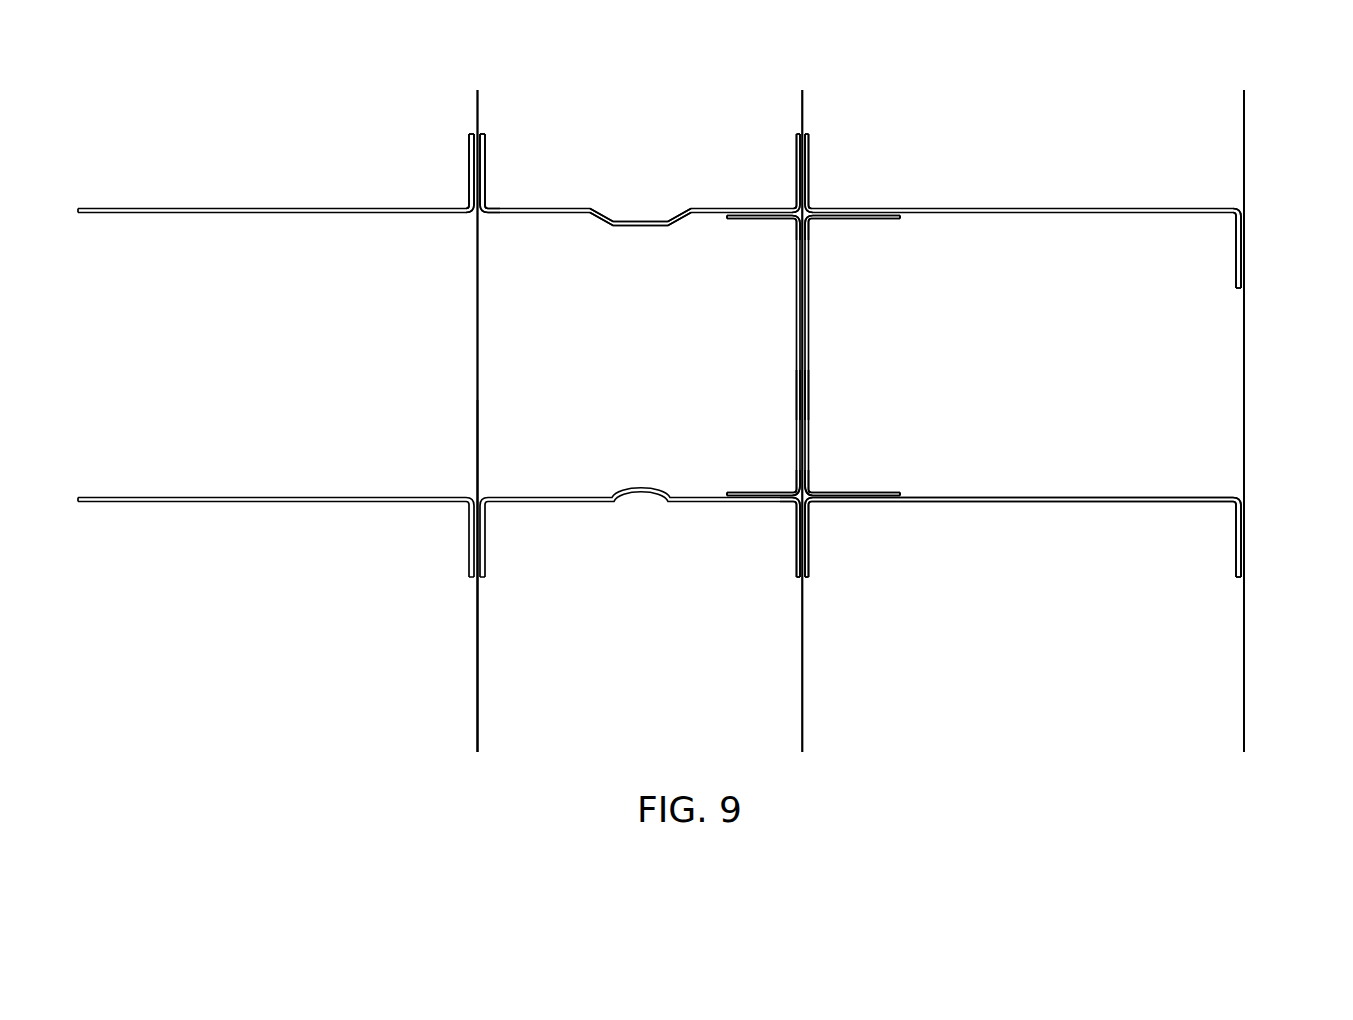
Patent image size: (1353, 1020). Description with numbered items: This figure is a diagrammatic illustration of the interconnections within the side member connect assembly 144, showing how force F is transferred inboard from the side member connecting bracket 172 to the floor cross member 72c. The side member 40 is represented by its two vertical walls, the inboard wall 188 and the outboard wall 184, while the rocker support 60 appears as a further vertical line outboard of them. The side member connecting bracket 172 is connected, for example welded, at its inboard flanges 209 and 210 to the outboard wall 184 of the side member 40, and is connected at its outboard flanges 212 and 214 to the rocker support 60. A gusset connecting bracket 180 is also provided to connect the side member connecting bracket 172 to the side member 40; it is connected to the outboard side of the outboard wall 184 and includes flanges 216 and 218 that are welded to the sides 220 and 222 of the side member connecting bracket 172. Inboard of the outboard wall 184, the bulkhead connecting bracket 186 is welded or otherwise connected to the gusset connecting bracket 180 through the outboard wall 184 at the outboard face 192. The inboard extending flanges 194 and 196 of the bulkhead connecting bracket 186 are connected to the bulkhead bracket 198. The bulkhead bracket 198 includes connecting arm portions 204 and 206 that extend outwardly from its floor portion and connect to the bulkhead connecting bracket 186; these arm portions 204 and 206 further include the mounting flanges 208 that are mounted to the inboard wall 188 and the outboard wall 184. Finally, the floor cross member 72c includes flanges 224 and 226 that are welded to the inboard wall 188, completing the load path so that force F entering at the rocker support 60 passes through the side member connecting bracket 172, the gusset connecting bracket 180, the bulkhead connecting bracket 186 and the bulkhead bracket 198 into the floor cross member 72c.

The side member 40 is at (477, 643).
The rocker support 60 is at (1244, 335).
The floor cross member 72c is at (266, 208).
The side member connect assembly 144 is at (1141, 132).
The side member connecting bracket 172 is at (1003, 512).
The gusset connecting bracket 180 is at (819, 354).
The outboard wall 184 is at (802, 653).
The bulkhead connecting bracket 186 is at (782, 354).
The inboard wall 188 is at (477, 663).
The outboard face 192 is at (802, 393).
The inboard extending flange 194 is at (748, 218).
The inboard extending flange 196 is at (748, 494).
The bulkhead bracket 198 is at (581, 201).
The connecting arm portion 204 is at (640, 221).
The connecting arm portion 206 is at (550, 502).
The mounting flange 208 is at (485, 163).
The inboard flange 209 is at (809, 163).
The inboard flange 210 is at (809, 512).
The outboard flange 212 is at (1236, 270).
The outboard flange 214 is at (1236, 572).
The flange 216 is at (870, 218).
The flange 218 is at (868, 494).
The side 220 is at (1010, 208).
The side 222 is at (1130, 502).
The flange 224 is at (469, 163).
The flange 226 is at (469, 545).
The force direction F is at (1278, 398).